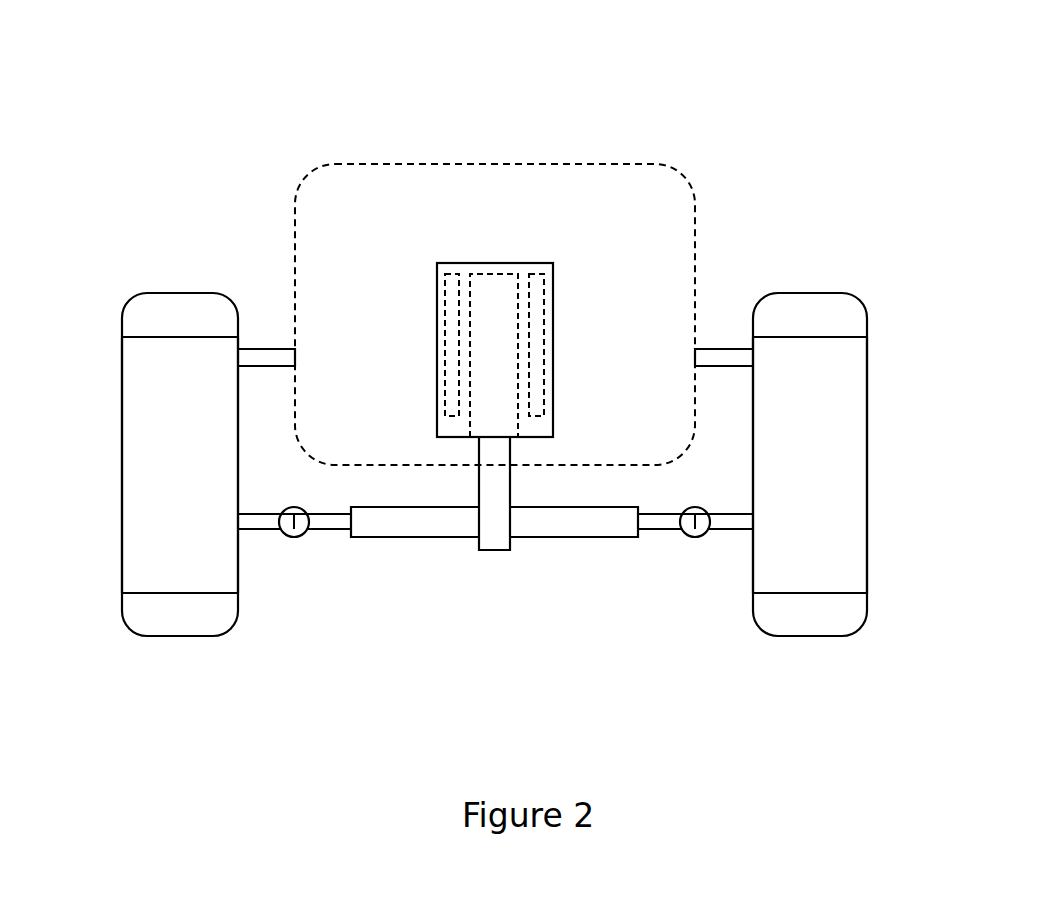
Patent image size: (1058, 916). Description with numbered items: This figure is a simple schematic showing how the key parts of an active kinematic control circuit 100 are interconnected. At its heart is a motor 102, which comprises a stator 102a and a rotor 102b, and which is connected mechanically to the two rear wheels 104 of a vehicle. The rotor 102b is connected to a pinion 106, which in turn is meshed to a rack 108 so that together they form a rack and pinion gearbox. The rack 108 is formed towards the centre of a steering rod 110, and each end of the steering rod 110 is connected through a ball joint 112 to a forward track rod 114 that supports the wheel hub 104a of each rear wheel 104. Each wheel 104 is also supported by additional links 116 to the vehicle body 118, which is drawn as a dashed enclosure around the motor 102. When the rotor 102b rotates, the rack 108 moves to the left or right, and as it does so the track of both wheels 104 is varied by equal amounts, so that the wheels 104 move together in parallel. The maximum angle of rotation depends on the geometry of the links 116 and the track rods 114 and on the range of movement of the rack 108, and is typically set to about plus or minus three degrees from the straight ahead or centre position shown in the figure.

The active kinematic control circuit 100 is at (240, 95).
The motor 102 is at (487, 230).
The stator 102a is at (448, 270).
The rotor 102b is at (477, 270).
The rear wheel 104 is at (501, 421).
The wheel hub 104a is at (122, 404).
The pinion 106 is at (502, 553).
The rack 108 is at (441, 538).
The steering rod 110 is at (328, 532).
The ball joint 112 is at (296, 540).
The forward track rod 114 is at (253, 532).
The additional links 116 is at (268, 349).
The vehicle body 118 is at (650, 165).